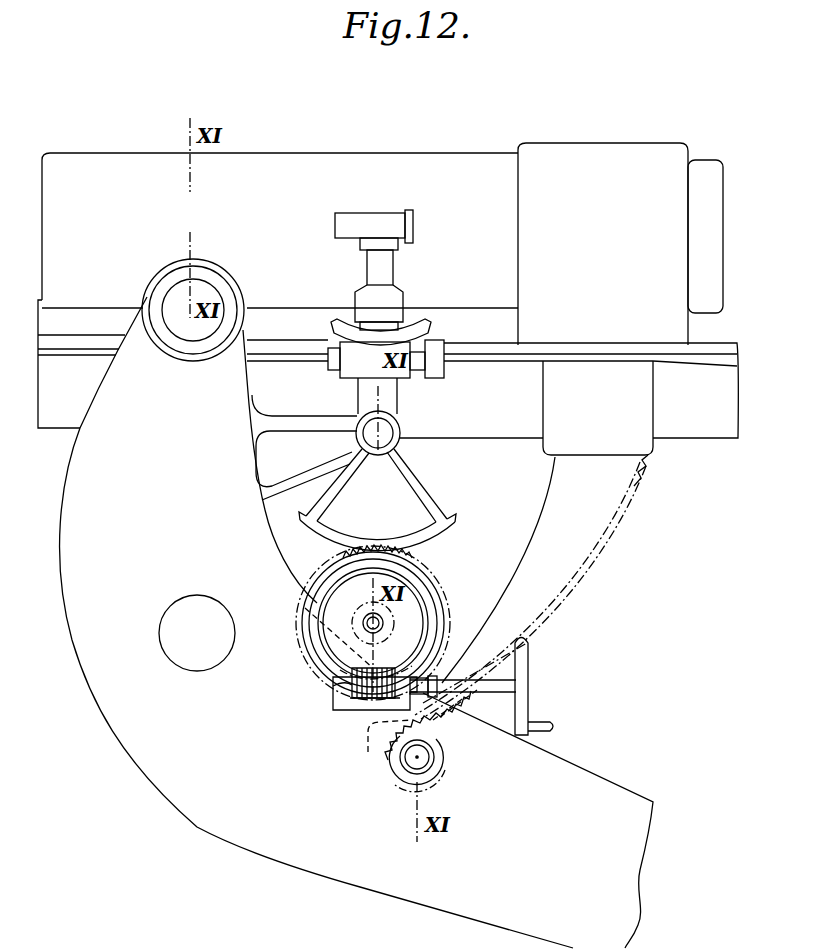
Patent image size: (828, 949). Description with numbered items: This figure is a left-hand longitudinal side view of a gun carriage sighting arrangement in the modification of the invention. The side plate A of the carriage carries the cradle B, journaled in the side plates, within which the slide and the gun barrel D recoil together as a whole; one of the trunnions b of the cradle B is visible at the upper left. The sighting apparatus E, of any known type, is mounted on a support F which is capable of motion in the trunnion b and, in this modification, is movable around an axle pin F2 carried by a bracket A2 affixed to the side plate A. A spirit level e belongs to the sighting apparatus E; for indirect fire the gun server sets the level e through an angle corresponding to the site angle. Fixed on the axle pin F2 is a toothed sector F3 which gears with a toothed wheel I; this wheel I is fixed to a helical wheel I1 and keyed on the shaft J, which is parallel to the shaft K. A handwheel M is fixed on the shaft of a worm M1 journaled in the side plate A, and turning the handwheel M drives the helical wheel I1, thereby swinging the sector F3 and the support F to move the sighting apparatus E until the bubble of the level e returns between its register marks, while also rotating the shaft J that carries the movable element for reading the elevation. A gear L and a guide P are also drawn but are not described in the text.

The side plate A is at (190, 802).
The bracket A2 is at (301, 418).
The cradle B is at (701, 432).
The gun barrel D is at (466, 166).
The sighting apparatus E is at (386, 274).
The spirit level e is at (392, 320).
The trunnion b is at (178, 328).
The support F is at (390, 407).
The axle pin F2 is at (386, 438).
The toothed sector F3 is at (438, 522).
The toothed wheel I is at (407, 567).
The helical wheel I1 is at (412, 658).
The shaft J is at (385, 626).
The shaft K is at (428, 757).
The gear L is at (392, 760).
The handwheel M is at (530, 671).
The worm M1 is at (354, 700).
The guide rail P is at (597, 557).